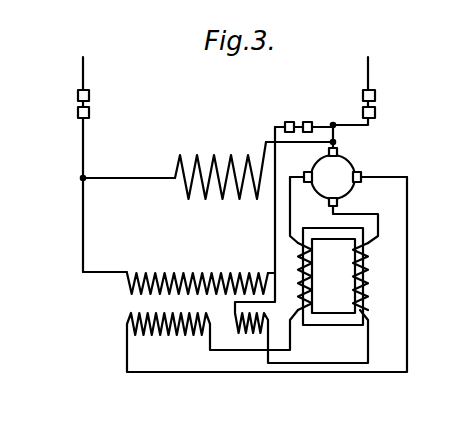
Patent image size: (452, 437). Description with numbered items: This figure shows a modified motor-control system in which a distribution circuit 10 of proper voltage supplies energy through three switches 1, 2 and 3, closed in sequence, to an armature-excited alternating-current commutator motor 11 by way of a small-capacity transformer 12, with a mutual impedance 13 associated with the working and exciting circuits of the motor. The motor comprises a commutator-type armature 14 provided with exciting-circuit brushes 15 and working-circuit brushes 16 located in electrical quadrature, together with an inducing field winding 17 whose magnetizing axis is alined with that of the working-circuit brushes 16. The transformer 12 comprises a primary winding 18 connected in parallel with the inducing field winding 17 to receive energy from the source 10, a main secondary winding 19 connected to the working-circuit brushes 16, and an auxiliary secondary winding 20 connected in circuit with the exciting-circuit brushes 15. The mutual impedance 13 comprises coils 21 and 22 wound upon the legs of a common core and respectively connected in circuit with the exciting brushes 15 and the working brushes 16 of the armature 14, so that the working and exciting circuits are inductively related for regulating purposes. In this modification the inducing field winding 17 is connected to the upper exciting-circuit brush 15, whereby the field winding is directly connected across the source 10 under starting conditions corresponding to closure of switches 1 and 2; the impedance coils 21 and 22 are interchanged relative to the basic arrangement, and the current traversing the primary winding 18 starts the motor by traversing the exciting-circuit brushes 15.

The switch 1 is at (78, 108).
The switch 2 is at (376, 104).
The switch 3 is at (299, 123).
The distribution circuit 10 is at (83, 72).
The alternating-current commutator motor 11 is at (386, 153).
The transformer 12 is at (110, 313).
The mutual impedance 13 is at (352, 281).
The armature 14 is at (333, 177).
The exciting-circuit brushes 15 is at (329, 151).
The working-circuit brushes 16 is at (304, 174).
The inducing field winding 17 is at (214, 165).
The primary winding 18 is at (185, 280).
The main secondary winding 19 is at (152, 321).
The auxiliary secondary winding 20 is at (233, 319).
The impedance coil 21 is at (298, 262).
The impedance coil 22 is at (366, 283).